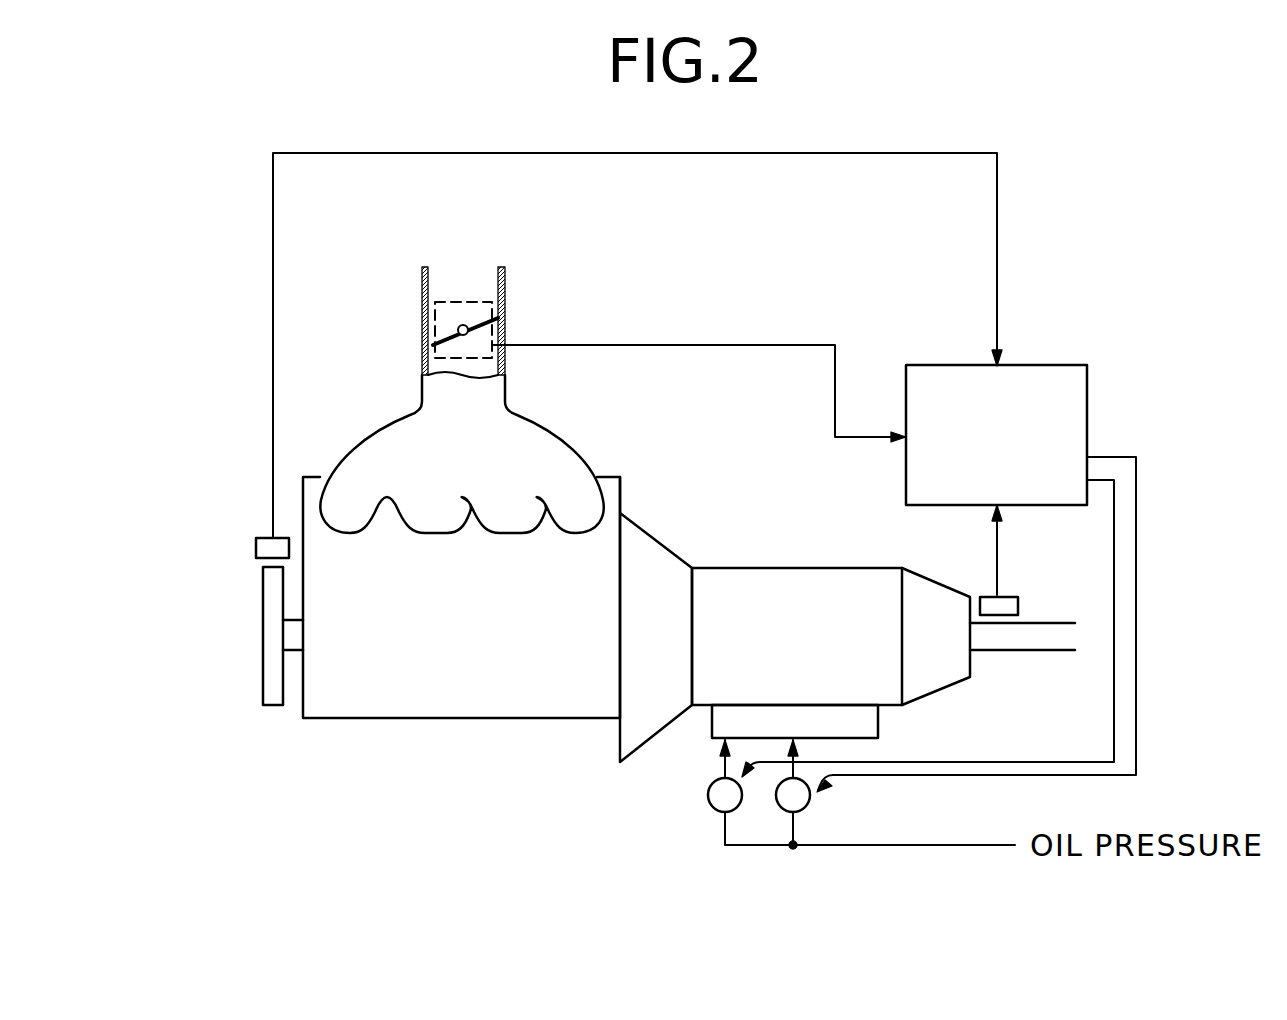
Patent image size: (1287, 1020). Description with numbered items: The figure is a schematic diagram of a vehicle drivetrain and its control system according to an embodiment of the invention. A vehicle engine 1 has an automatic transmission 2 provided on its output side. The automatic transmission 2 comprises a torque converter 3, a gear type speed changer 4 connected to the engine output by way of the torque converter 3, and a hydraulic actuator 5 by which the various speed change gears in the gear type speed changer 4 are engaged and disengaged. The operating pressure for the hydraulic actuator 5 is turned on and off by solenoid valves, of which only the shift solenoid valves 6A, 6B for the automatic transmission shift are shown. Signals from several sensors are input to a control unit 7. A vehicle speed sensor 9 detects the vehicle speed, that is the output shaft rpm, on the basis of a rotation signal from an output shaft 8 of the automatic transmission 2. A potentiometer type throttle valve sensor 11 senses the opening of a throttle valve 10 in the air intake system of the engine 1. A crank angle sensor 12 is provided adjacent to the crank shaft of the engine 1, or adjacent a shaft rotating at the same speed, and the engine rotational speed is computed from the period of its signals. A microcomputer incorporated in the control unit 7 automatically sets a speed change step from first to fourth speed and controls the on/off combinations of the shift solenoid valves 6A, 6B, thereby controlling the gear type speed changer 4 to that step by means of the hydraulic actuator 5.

The vehicle engine 1 is at (601, 472).
The automatic transmission 2 is at (795, 619).
The torque converter 3 is at (668, 650).
The gear type speed changer 4 is at (806, 650).
The hydraulic actuator 5 is at (882, 728).
The shift solenoid valve 6A is at (715, 812).
The shift solenoid valve 6B is at (805, 808).
The control unit 7 is at (1052, 363).
The output shaft 8 is at (1033, 650).
The vehicle speed sensor 9 is at (1013, 595).
The throttle valve 10 is at (450, 330).
The throttle valve sensor 11 is at (477, 300).
The crank angle sensor 12 is at (266, 538).